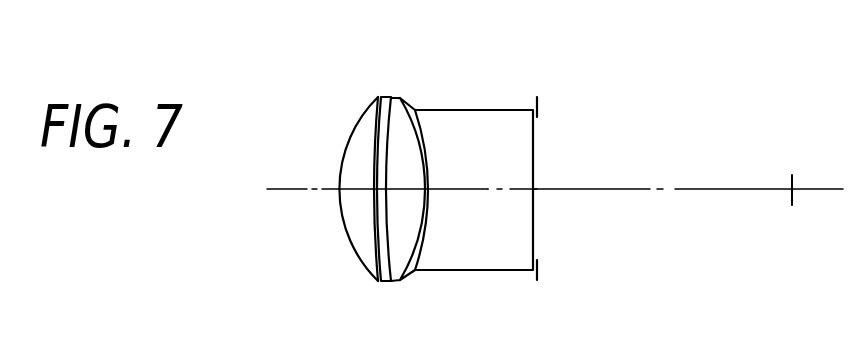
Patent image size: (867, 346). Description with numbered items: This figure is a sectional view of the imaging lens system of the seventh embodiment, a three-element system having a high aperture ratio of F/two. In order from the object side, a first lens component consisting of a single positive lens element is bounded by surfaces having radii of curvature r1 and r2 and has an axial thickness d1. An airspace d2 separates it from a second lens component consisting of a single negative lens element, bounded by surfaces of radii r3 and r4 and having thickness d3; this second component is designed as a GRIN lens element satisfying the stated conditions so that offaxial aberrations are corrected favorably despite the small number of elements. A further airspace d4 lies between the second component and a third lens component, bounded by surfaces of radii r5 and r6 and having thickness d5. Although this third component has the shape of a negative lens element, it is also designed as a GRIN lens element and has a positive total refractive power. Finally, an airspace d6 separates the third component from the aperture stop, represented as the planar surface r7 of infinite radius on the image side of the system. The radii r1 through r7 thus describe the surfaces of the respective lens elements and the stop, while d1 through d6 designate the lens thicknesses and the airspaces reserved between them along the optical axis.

The radius of curvature of first surface r1 is at (348, 137).
The radius of curvature of second surface r2 is at (372, 127).
The radius of curvature of third surface r3 is at (390, 98).
The radius of curvature of fourth surface r4 is at (400, 130).
The radius of curvature of fifth surface r5 is at (424, 117).
The radius of curvature of sixth surface r6 is at (530, 137).
The aperture stop surface r7 is at (540, 105).
The thickness of first lens element d1 is at (352, 198).
The first airspace d2 is at (372, 222).
The thickness of second lens element d3 is at (378, 243).
The second airspace d4 is at (398, 185).
The thickness of third lens element d5 is at (463, 190).
The third airspace d6 is at (537, 193).